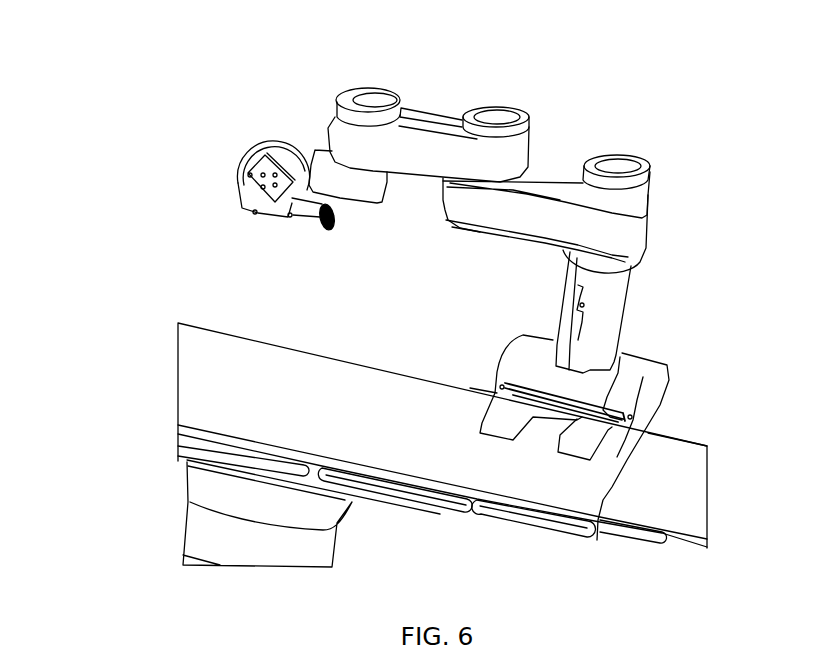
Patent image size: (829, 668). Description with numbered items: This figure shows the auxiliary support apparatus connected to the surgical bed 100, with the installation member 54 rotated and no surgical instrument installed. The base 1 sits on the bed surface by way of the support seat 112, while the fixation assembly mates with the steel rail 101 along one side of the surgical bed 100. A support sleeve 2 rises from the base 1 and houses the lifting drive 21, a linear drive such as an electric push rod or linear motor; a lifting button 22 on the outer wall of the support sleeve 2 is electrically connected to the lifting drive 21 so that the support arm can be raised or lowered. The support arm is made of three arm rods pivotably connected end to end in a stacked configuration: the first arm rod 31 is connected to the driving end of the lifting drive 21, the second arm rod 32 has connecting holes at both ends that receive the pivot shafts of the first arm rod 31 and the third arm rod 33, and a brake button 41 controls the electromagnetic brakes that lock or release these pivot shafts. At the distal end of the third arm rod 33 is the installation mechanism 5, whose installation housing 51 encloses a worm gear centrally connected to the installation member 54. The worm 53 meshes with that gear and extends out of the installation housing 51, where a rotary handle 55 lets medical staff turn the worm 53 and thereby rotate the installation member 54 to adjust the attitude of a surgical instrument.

The surgical bed 100 is at (150, 410).
The steel rail 101 is at (427, 498).
The base 1 is at (619, 437).
The support seat 112 is at (595, 440).
The support sleeve 2 is at (651, 272).
The lifting drive 21 is at (622, 261).
The lifting button 22 is at (583, 305).
The first arm rod 31 is at (542, 207).
The second arm rod 32 is at (428, 99).
The brake button 41 is at (433, 116).
The third arm rod 33 is at (315, 150).
The installation mechanism 5 is at (233, 189).
The installation housing 51 is at (258, 150).
The installation member 54 is at (238, 183).
The worm 53 is at (302, 215).
The rotary handle 55 is at (324, 230).